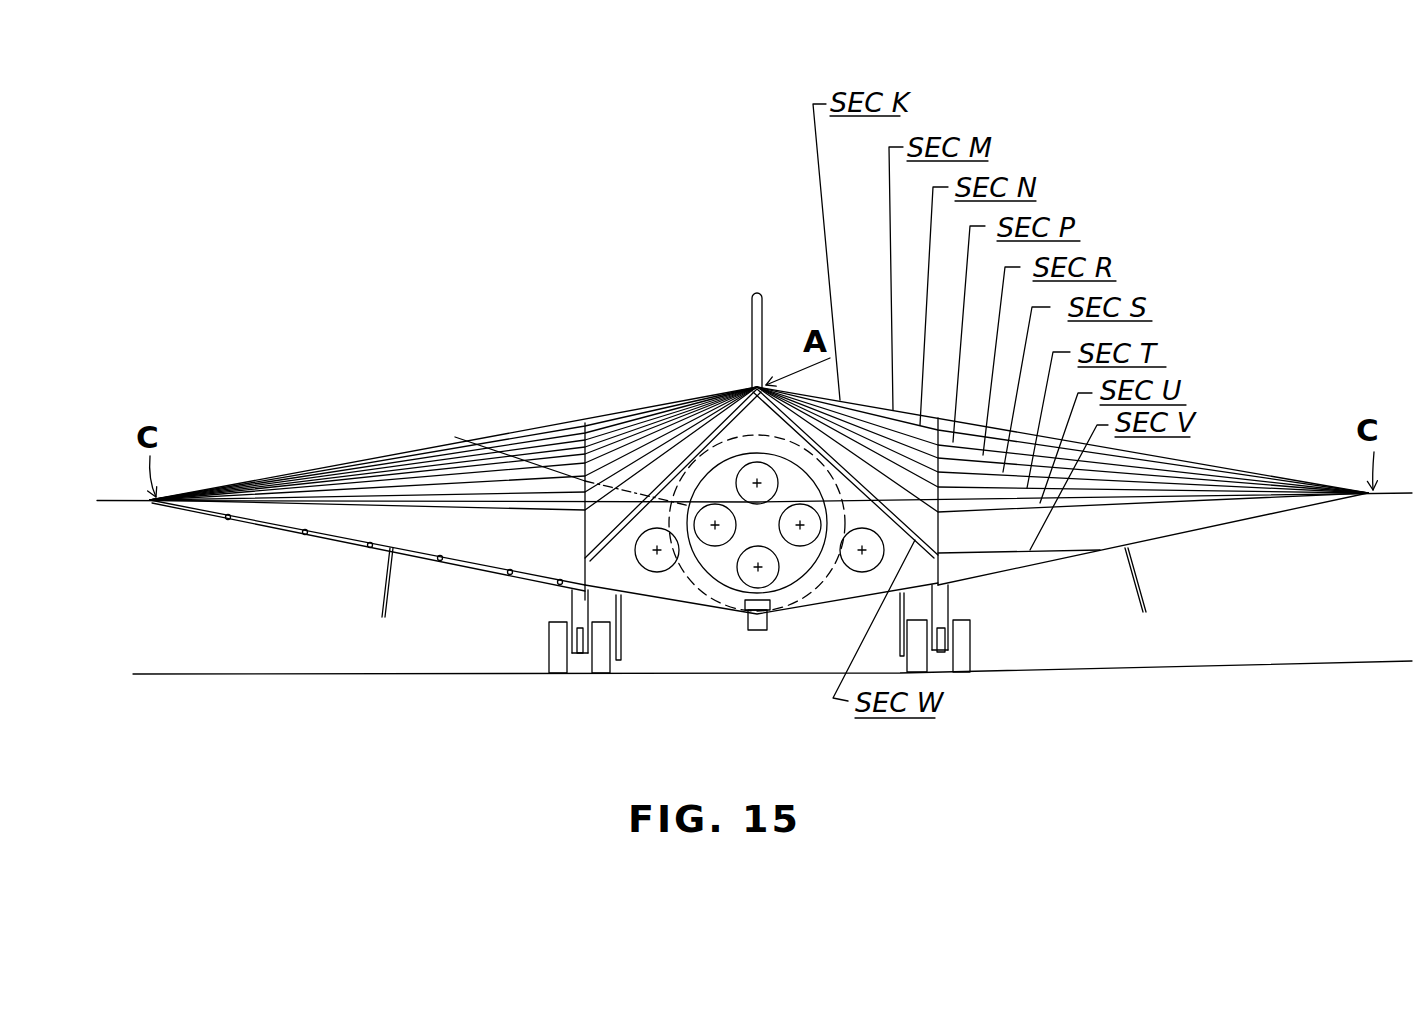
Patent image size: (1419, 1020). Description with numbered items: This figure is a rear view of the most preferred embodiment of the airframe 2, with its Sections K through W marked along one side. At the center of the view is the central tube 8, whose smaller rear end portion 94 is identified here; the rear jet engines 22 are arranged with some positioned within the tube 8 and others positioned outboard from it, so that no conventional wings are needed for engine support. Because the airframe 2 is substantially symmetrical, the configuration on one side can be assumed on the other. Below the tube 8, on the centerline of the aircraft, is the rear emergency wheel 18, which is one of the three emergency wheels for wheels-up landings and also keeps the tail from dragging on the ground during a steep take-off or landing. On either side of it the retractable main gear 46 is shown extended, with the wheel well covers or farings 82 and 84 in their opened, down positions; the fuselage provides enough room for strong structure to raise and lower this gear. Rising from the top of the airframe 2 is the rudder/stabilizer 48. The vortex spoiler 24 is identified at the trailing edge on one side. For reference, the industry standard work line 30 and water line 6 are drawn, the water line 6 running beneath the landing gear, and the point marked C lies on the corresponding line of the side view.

The airframe 2 is at (232, 140).
The water line 6 is at (1272, 667).
The central tube 8 is at (607, 449).
The rear emergency landing wheel 18 is at (757, 631).
The rear jet engines 22 is at (583, 508).
The vortex spoiler 24 is at (306, 543).
The work line 30 is at (113, 506).
The retractable main gear 46 is at (553, 680).
The rudder/stabilizer 48 is at (749, 325).
The wheel well cover/faring 82 is at (380, 601).
The wheel well cover/faring 84 is at (623, 643).
The smaller rear end portion of the central tube 94 is at (709, 476).